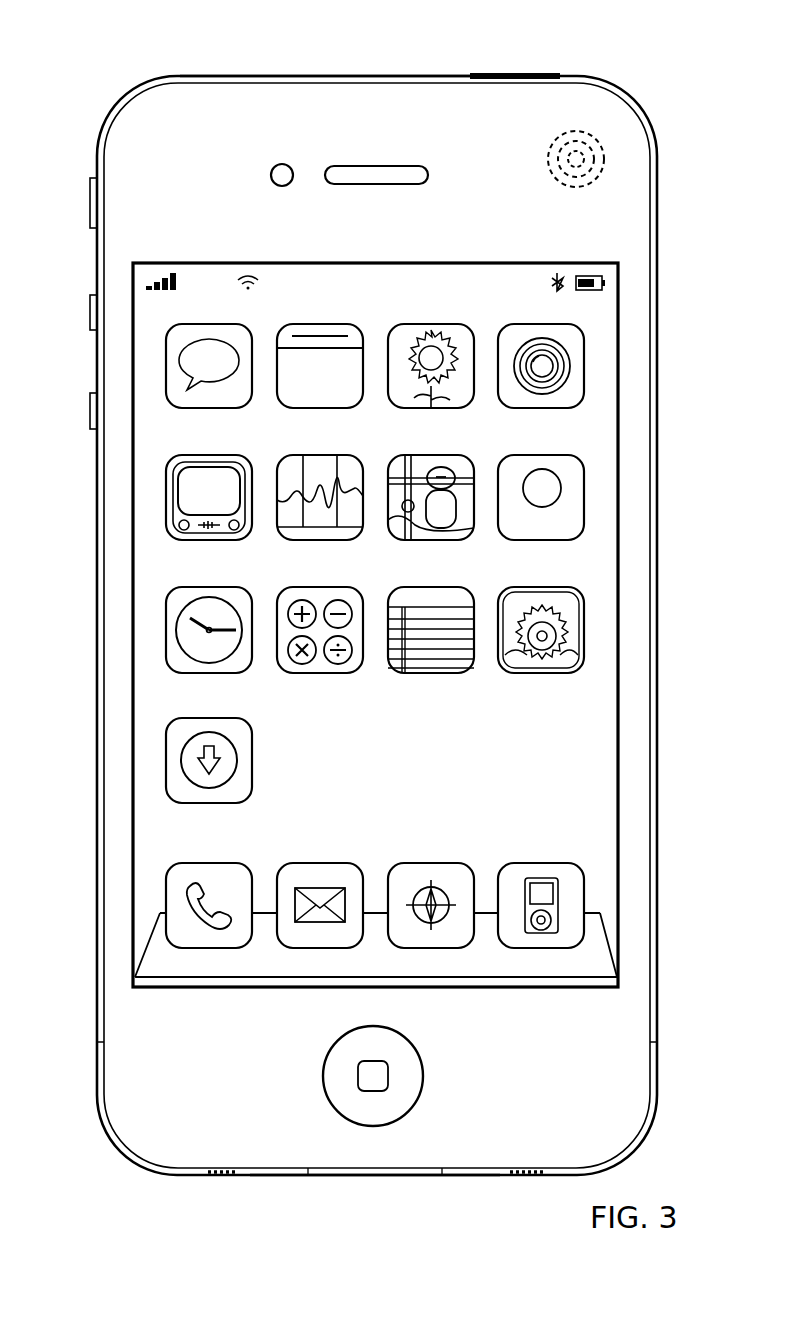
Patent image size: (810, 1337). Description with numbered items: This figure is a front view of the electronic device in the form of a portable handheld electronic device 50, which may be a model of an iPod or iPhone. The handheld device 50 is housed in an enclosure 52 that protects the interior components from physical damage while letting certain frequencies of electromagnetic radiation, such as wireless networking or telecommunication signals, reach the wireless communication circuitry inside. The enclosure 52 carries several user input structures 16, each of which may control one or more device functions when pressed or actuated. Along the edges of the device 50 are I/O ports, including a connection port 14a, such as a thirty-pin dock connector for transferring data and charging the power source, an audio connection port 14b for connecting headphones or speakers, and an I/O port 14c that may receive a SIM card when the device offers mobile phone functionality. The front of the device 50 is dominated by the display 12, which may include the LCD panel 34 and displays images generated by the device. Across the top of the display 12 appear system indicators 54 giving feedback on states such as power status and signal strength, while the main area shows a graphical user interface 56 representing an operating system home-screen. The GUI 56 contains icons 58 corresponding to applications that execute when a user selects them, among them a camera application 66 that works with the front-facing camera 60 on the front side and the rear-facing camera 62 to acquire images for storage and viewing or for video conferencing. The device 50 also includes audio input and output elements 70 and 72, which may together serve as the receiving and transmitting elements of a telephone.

The portable handheld electronic device 50 is at (186, 34).
The display 12 is at (620, 590).
The connection port 14a is at (358, 1178).
The audio connection port 14b is at (222, 76).
The I/O port 14c is at (374, 76).
The user input structures 16 is at (545, 76).
The LCD panel 34 is at (605, 742).
The enclosure 52 is at (668, 250).
The system indicators 54 is at (172, 272).
The graphical user interface 56 is at (422, 642).
The icons 58 is at (352, 588).
The front-facing camera 60 is at (288, 165).
The rear-facing camera 62 is at (592, 132).
The camera application 66 is at (545, 330).
The audio input and output element 70 is at (218, 1180).
The audio input and output element 72 is at (392, 166).